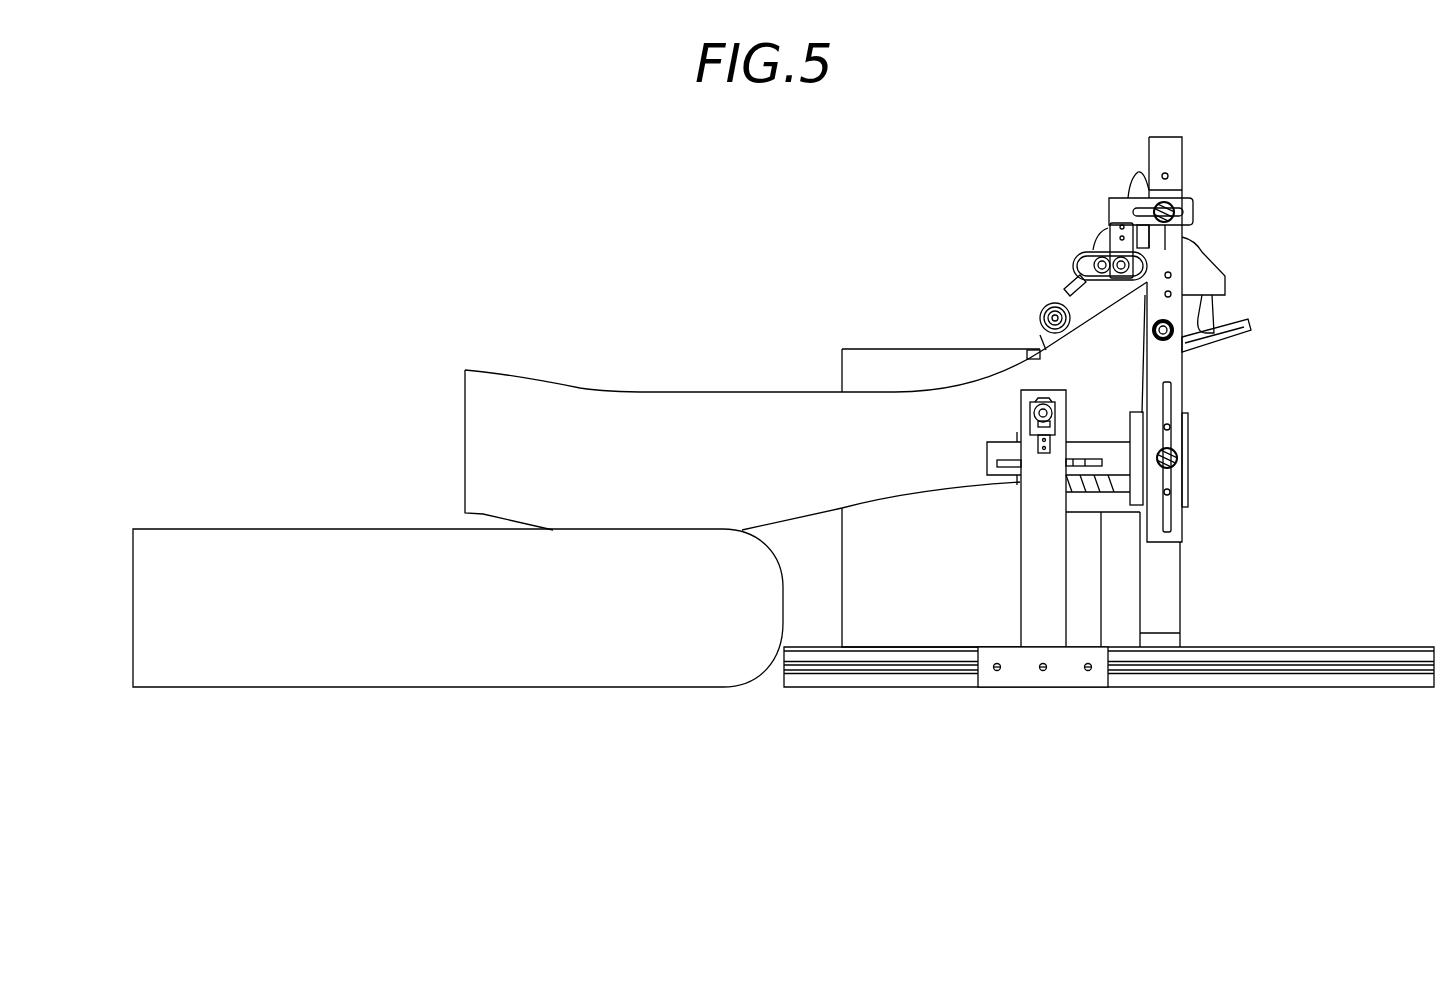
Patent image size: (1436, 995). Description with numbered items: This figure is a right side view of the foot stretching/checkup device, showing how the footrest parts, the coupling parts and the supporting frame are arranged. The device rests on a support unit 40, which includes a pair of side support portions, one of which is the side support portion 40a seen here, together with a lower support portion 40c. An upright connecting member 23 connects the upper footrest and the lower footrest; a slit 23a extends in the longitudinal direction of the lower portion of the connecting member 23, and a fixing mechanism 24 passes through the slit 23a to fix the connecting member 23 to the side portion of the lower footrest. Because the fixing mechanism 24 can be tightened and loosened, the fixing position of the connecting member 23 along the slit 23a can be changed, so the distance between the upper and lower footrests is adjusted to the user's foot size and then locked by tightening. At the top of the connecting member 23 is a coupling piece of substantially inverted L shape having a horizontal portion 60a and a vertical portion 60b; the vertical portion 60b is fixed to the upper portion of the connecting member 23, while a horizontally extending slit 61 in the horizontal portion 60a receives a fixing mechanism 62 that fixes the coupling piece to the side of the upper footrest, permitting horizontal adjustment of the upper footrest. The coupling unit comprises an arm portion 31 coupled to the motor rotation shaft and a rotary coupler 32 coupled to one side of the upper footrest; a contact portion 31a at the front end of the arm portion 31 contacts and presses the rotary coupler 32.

The connecting member 23 is at (1170, 365).
The slit 23a is at (1170, 394).
The fixing mechanism 24 is at (1175, 458).
The arm portion 31 is at (1252, 325).
The contact portion 31a is at (1208, 313).
The rotary coupler 32 is at (1207, 268).
The support unit 40 is at (1087, 571).
The side support portion 40a is at (1040, 625).
The lower support portion 40c is at (1165, 612).
The horizontal portion 60a is at (1188, 211).
The vertical portion 60b is at (1110, 223).
The slit 61 is at (1173, 206).
The fixing mechanism 62 is at (1157, 209).